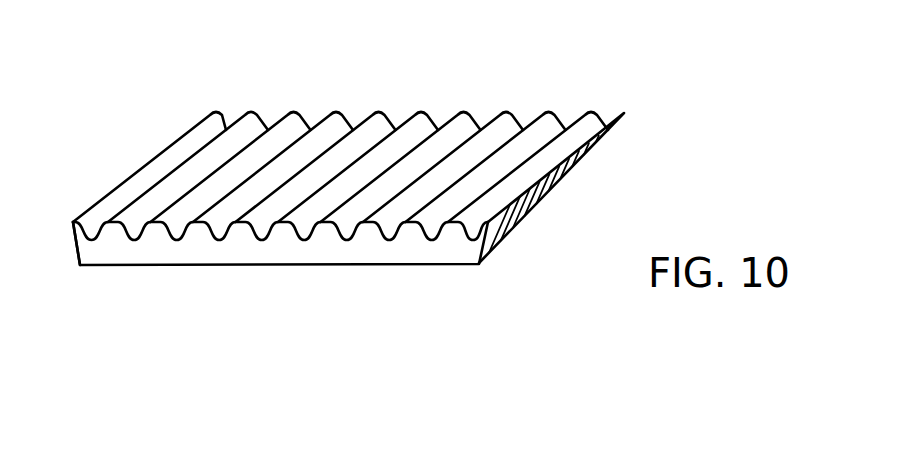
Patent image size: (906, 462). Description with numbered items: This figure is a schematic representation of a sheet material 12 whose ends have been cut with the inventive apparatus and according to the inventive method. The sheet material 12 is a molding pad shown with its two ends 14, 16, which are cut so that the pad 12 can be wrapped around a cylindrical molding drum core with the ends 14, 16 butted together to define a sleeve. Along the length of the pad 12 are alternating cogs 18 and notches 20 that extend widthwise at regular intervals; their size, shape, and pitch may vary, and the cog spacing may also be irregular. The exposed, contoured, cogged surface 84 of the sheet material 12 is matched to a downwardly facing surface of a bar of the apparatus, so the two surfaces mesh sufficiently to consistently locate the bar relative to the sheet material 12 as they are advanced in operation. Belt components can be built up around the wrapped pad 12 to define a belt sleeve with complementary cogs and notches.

The sheet material 12 is at (387, 257).
The end 14 is at (593, 152).
The end 16 is at (78, 250).
The cog 18 is at (377, 123).
The notch 20 is at (300, 241).
The cogged surface 84 is at (230, 143).